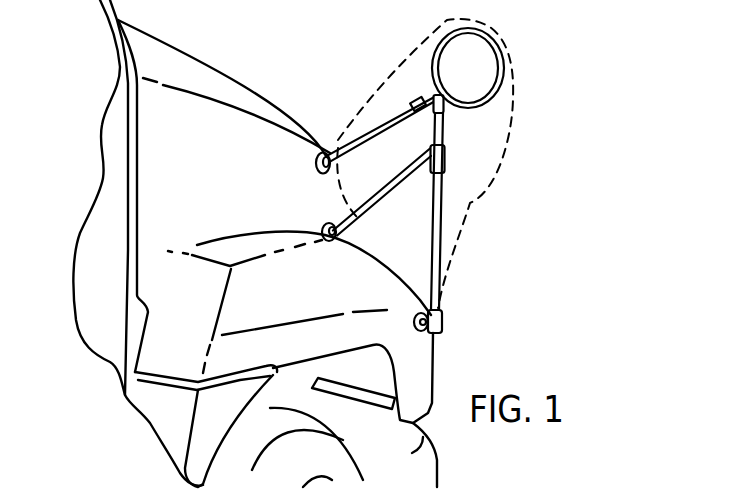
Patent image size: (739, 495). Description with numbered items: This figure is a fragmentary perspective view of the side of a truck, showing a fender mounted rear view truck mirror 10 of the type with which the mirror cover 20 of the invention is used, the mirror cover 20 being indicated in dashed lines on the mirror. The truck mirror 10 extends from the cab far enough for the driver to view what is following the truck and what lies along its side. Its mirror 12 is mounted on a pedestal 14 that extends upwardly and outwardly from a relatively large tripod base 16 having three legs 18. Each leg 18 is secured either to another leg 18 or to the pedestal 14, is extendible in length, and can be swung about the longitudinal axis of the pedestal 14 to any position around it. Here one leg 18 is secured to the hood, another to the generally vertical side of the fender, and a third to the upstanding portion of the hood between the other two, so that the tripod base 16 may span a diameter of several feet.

The truck mirror 10 is at (532, 78).
The mirror 12 is at (478, 68).
The pedestal 14 is at (440, 132).
The tripod base 16 is at (457, 203).
The legs 18 is at (338, 228).
The mirror cover 20 is at (497, 167).